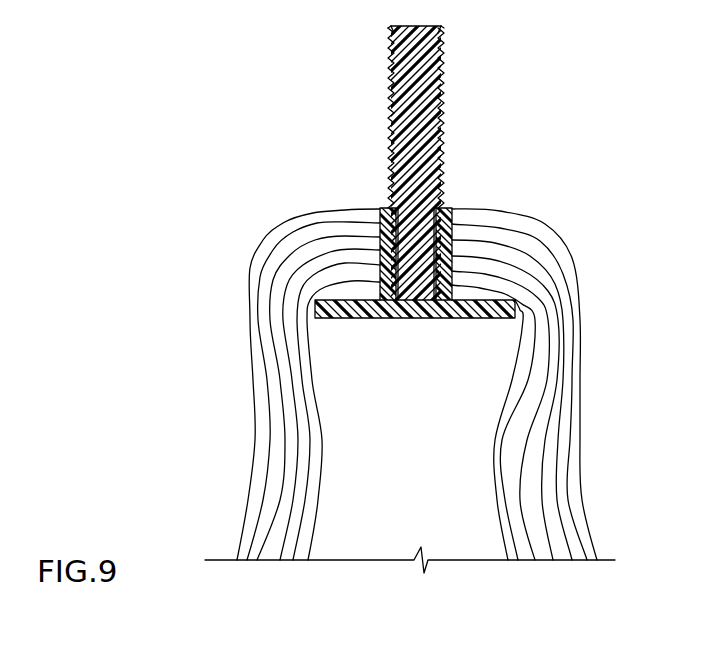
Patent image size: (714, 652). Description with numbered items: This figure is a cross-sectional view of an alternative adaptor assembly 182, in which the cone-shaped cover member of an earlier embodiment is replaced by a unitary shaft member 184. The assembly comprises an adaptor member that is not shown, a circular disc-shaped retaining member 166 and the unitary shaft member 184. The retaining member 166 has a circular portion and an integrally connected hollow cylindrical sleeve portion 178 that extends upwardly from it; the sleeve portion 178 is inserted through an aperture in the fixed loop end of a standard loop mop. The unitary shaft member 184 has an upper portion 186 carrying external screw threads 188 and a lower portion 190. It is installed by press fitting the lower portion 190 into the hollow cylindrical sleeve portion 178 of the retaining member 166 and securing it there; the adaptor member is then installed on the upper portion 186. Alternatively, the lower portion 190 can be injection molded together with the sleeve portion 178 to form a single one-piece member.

The circular disc-shaped retaining member 166 is at (430, 320).
The hollow cylindrical sleeve portion 178 is at (452, 210).
The adaptor assembly 182 is at (497, 143).
The unitary shaft member 184 is at (388, 108).
The upper portion 186 is at (441, 60).
The external screw threads 188 is at (440, 107).
The lower portion 190 is at (390, 253).